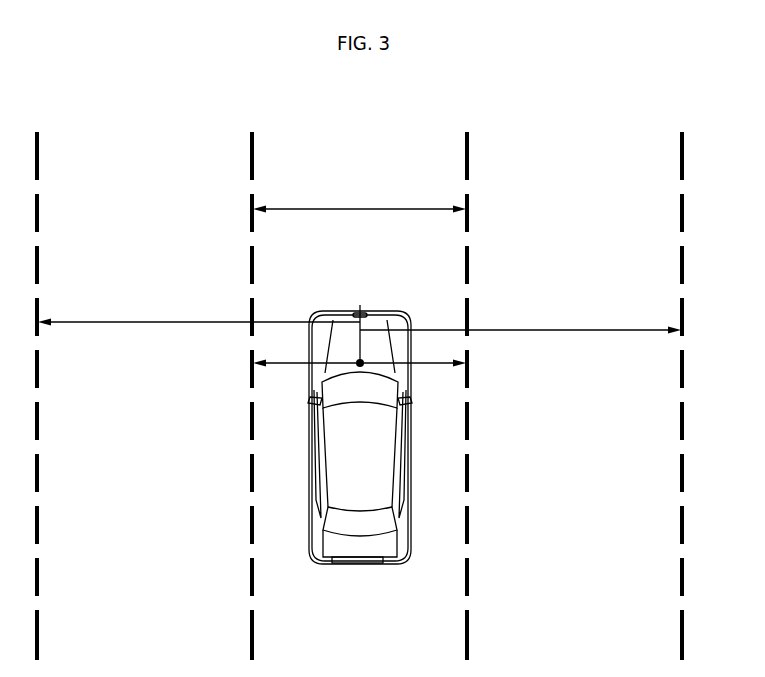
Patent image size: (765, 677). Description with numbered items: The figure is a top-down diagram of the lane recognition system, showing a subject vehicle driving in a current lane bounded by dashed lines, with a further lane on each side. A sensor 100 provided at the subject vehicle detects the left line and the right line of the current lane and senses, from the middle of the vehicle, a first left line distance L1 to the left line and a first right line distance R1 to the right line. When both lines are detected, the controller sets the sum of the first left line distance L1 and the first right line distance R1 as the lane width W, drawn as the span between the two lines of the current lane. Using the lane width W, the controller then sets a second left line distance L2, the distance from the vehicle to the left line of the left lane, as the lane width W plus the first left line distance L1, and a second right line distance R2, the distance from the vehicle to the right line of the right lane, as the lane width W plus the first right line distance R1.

The sensor 100 is at (362, 361).
The lane width W is at (359, 198).
The first left line distance L1 is at (292, 366).
The first right line distance R1 is at (428, 366).
The second left line distance L2 is at (138, 321).
The second right line distance R2 is at (582, 328).